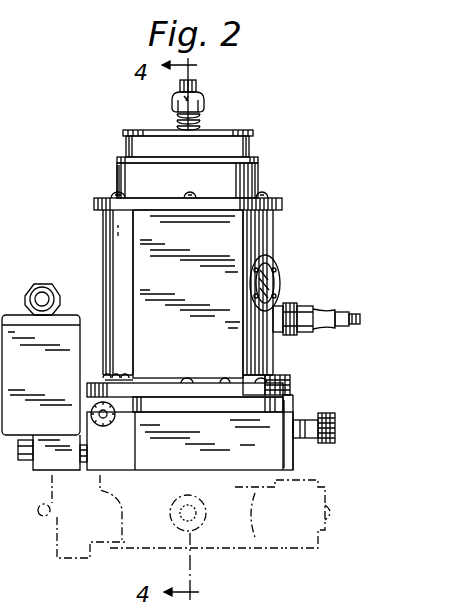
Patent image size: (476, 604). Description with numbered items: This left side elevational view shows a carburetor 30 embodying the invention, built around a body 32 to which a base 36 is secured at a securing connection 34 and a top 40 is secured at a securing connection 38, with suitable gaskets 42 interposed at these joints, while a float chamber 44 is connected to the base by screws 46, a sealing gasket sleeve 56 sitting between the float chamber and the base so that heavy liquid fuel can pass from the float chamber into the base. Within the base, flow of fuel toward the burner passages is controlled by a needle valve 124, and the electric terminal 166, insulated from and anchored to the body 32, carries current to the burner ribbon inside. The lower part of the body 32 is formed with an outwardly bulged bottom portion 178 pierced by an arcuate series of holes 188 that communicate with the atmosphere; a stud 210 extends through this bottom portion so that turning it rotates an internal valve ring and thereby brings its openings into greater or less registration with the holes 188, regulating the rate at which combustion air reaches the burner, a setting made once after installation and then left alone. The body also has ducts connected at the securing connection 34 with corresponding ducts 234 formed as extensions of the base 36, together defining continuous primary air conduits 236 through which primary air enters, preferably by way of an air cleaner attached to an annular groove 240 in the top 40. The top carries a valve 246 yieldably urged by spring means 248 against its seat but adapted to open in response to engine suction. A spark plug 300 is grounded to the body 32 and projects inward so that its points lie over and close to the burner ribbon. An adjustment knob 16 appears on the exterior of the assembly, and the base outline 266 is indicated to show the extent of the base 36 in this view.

The adjustment knob 16 is at (335, 420).
The carburetor 30 is at (297, 252).
The body 32 is at (103, 236).
The securing connection 34 is at (193, 395).
The base 36 is at (295, 457).
The securing connection 38 is at (190, 193).
The top 40 is at (117, 172).
The gaskets 42 is at (282, 205).
The float chamber 44 is at (72, 316).
The screws 46 is at (22, 460).
The sealing gasket sleeve 56 is at (82, 462).
The needle valve 124 is at (108, 425).
The electric terminal 166 is at (305, 328).
The bulged bottom portion 178 is at (103, 378).
The holes 188 is at (116, 378).
The stud 210 is at (290, 388).
The ducts 234 is at (218, 460).
The primary air conduits 236 is at (240, 228).
The annular groove 240 is at (250, 140).
The valve 246 is at (196, 86).
The spring means 248 is at (200, 120).
The base outline 266 is at (323, 488).
The spark plug 300 is at (335, 310).